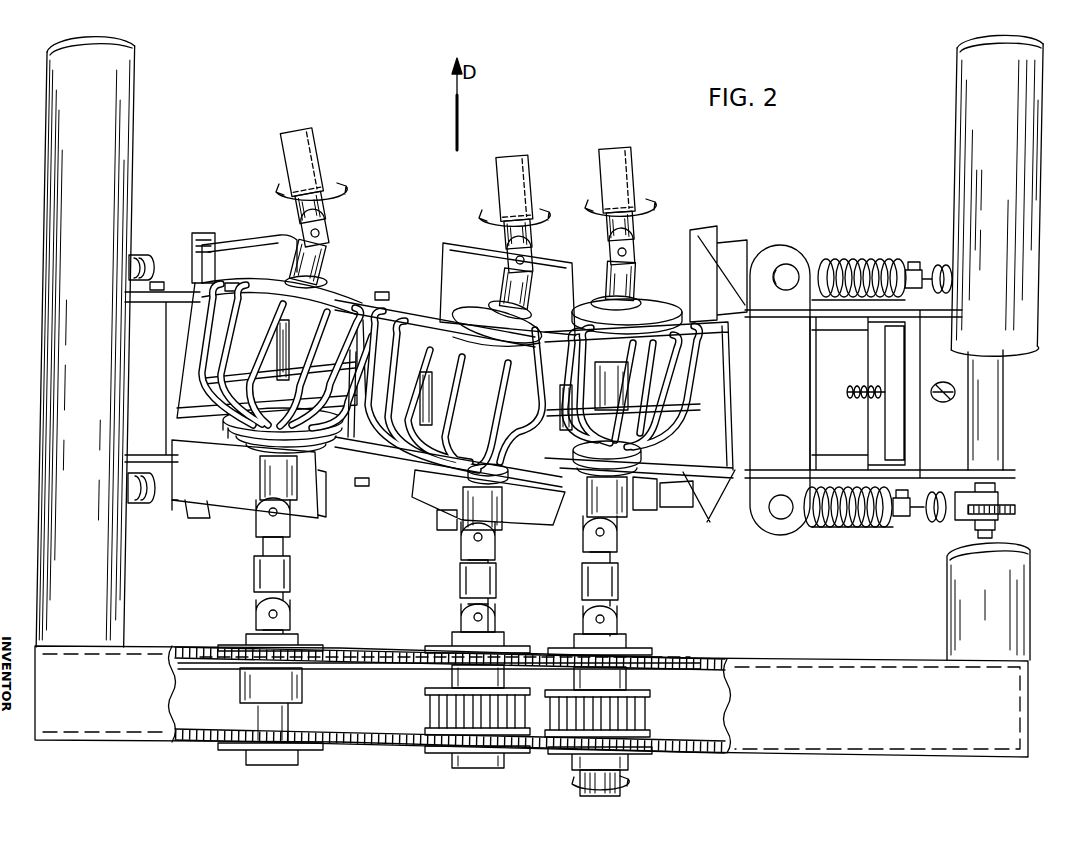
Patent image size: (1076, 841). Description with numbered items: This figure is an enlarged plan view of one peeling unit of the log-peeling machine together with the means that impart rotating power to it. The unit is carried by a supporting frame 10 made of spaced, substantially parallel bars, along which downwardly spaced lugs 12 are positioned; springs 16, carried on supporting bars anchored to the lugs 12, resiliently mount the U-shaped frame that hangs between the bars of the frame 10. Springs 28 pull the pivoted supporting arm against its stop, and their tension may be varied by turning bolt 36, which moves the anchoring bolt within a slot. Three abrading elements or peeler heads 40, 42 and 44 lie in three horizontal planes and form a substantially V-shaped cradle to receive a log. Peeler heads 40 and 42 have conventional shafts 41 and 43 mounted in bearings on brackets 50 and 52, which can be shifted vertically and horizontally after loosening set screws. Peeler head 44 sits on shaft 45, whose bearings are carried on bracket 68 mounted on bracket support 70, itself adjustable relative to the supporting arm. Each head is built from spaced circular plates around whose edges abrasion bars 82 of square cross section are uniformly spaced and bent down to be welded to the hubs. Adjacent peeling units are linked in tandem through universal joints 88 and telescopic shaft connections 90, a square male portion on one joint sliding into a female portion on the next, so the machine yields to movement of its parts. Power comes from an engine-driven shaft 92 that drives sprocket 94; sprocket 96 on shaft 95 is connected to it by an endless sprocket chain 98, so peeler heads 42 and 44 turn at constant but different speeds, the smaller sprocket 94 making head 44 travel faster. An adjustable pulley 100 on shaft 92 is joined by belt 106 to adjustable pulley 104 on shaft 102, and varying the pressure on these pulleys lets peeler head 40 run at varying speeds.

The supporting frame 10 is at (70, 532).
The lugs 12 is at (1010, 508).
The springs 16 is at (940, 266).
The springs 28 is at (866, 265).
The bolt 36 is at (950, 390).
The peeler head 40 is at (476, 356).
The shaft 41 is at (512, 292).
The peeler head 42 is at (438, 352).
The shaft 43 is at (304, 266).
The peeler head 44 is at (640, 410).
The shaft 45 is at (626, 302).
The bracket 50 is at (461, 508).
The bracket 52 is at (236, 496).
The bracket 68 is at (720, 410).
The bracket support 70 is at (802, 390).
The abrasion bars 82 is at (228, 390).
The universal joints 88 is at (330, 234).
The telescopic shaft connections 90 is at (310, 158).
The shaft 92 is at (612, 792).
The sprocket 94 is at (655, 678).
The shaft 95 is at (290, 722).
The sprocket 96 is at (324, 672).
The sprocket chain 98 is at (383, 674).
The adjustable pulley 100 is at (650, 736).
The shaft 102 is at (452, 748).
The adjustable pulley 104 is at (430, 734).
The belt 106 is at (432, 708).